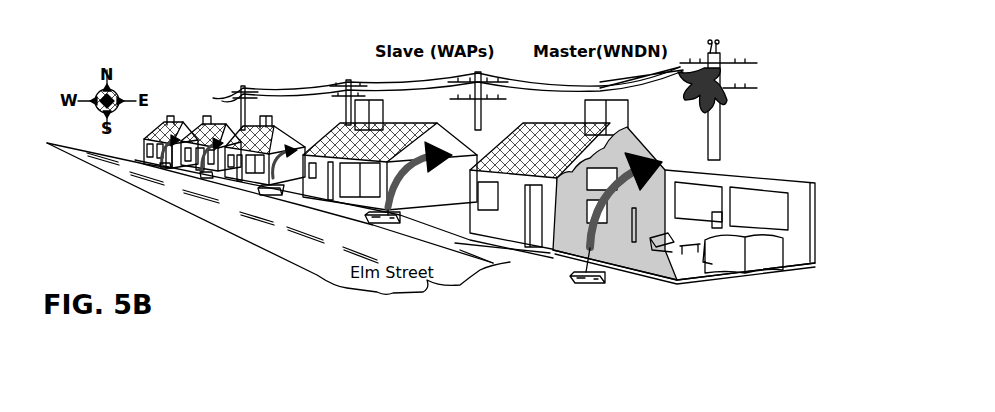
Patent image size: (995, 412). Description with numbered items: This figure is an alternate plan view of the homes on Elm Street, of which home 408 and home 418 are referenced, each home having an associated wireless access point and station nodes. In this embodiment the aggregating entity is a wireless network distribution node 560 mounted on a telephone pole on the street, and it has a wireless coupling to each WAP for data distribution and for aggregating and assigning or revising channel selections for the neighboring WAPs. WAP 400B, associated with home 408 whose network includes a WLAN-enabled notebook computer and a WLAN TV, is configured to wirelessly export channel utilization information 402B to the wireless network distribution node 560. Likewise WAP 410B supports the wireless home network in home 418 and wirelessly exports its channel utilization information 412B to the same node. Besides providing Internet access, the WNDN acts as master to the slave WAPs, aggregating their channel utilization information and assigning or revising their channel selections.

The wireless network distribution node 560 is at (718, 56).
The home 408 is at (612, 130).
The home 418 is at (372, 123).
The channel utilization information 412B is at (402, 175).
The WAP 410B is at (400, 222).
The channel utilization information 402B is at (493, 263).
The WAP 400B is at (570, 282).